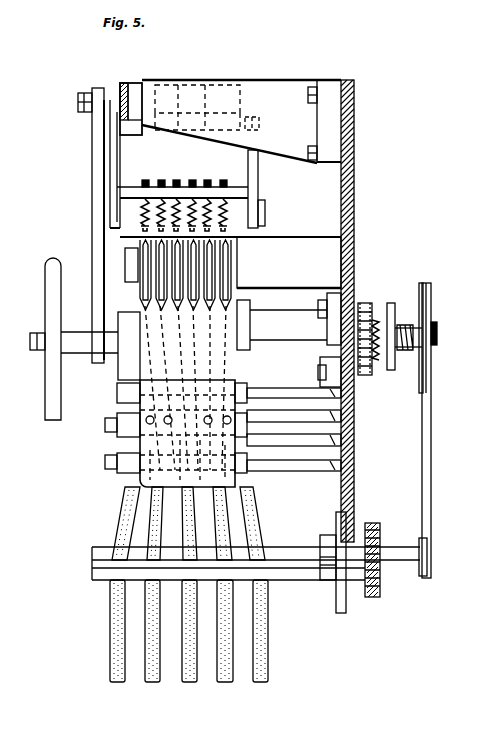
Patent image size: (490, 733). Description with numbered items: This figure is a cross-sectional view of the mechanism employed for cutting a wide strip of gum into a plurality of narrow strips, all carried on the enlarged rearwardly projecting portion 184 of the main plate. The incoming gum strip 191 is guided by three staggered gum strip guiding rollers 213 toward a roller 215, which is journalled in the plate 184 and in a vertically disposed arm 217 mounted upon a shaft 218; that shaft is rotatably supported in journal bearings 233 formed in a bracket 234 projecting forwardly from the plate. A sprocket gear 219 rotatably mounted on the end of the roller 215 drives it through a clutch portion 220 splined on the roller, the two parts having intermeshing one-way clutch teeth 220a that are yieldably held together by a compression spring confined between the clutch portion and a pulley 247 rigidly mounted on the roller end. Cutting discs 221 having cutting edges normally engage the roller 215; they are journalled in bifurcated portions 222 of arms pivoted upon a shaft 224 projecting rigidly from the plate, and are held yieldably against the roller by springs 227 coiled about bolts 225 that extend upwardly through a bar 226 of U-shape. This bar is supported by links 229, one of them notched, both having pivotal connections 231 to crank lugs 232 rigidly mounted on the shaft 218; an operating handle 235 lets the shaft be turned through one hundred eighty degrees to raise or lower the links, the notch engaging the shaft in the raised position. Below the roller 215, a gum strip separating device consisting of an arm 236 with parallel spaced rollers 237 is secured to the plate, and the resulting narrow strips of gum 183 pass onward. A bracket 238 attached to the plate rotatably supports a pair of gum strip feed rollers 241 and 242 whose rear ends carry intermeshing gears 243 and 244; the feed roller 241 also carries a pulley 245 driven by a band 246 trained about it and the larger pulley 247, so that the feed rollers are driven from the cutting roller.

The narrow strips of gum 183 is at (110, 664).
The rearwardly projecting portion of the plate 184 is at (355, 213).
The gum strip 191 is at (147, 483).
The gum strip guiding rollers 213 is at (290, 397).
The roller 215 is at (127, 358).
The vertically disposed arm 217 is at (98, 192).
The shaft 218 is at (110, 90).
The sprocket gear 219 is at (367, 302).
The clutch portion 220 is at (393, 371).
The one-way clutch teeth 220a is at (377, 378).
The cutting discs 221 is at (197, 292).
The bifurcated portions 222 is at (140, 245).
The shaft 224 is at (315, 245).
The bolts 225 is at (178, 172).
The bar of U-shape 226 is at (235, 193).
The springs 227 is at (203, 198).
The links 229 is at (117, 163).
The pivotal connections 231 is at (107, 131).
The crank lugs 232 is at (135, 100).
The journal bearings 233 is at (167, 129).
The bracket 234 is at (258, 82).
The operating handle 235 is at (123, 87).
The arm 236 is at (260, 417).
The rollers 237 is at (237, 403).
The bracket 238 is at (338, 610).
The gum strip feed roller 241 is at (283, 550).
The gum strip feed roller 242 is at (290, 572).
The gear 243 is at (372, 523).
The gear 244 is at (372, 597).
The pulley 245 is at (420, 540).
The band 246 is at (45, 272).
The pulley 247 is at (431, 318).